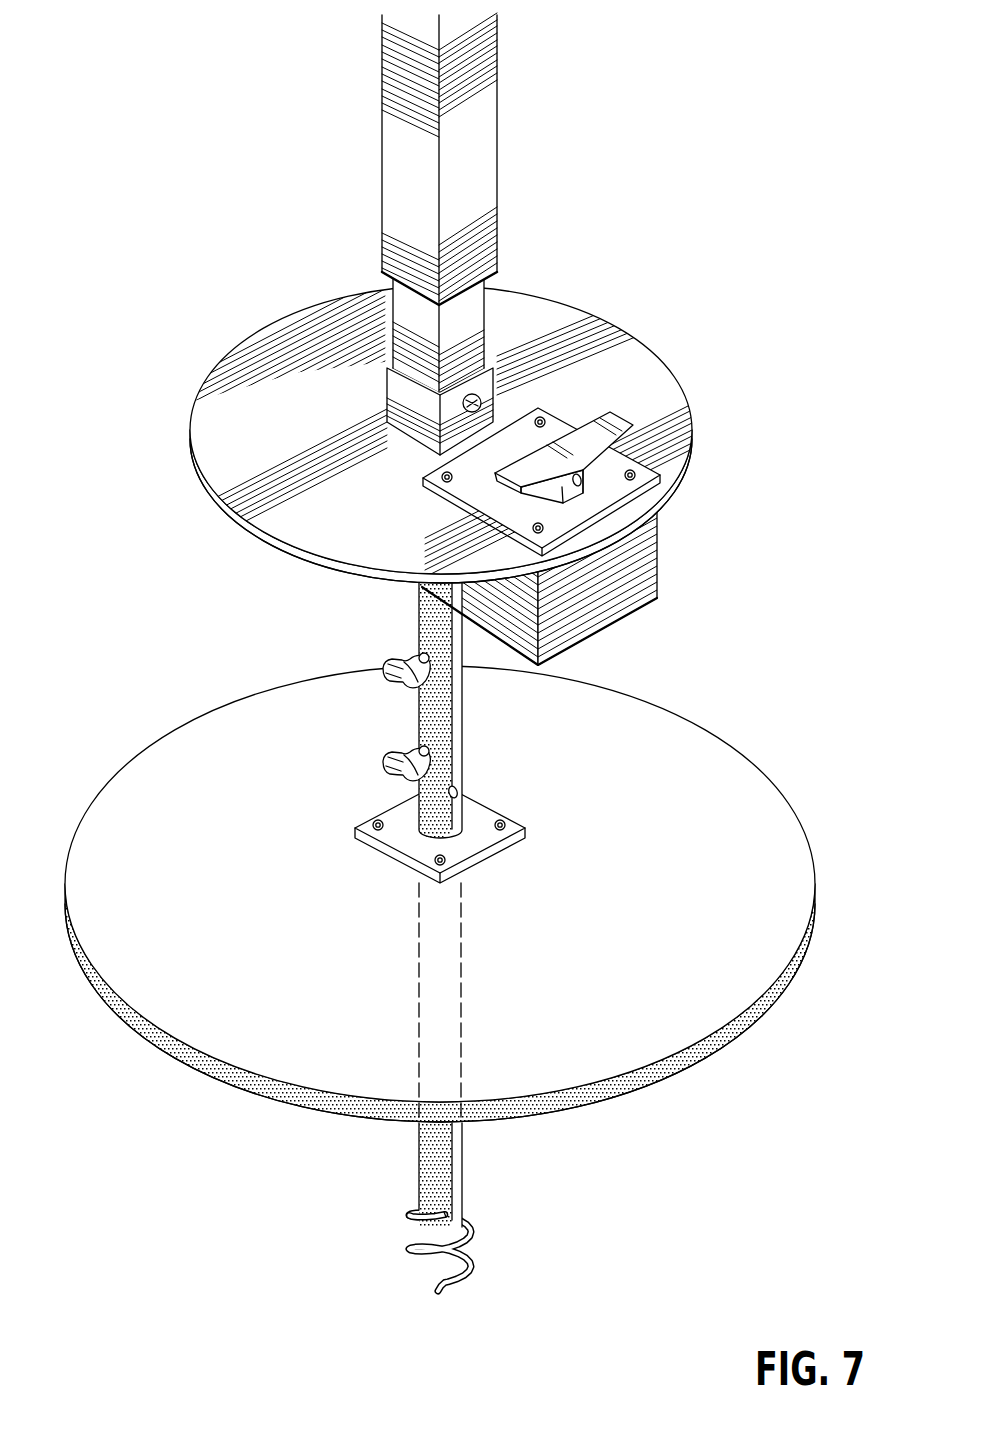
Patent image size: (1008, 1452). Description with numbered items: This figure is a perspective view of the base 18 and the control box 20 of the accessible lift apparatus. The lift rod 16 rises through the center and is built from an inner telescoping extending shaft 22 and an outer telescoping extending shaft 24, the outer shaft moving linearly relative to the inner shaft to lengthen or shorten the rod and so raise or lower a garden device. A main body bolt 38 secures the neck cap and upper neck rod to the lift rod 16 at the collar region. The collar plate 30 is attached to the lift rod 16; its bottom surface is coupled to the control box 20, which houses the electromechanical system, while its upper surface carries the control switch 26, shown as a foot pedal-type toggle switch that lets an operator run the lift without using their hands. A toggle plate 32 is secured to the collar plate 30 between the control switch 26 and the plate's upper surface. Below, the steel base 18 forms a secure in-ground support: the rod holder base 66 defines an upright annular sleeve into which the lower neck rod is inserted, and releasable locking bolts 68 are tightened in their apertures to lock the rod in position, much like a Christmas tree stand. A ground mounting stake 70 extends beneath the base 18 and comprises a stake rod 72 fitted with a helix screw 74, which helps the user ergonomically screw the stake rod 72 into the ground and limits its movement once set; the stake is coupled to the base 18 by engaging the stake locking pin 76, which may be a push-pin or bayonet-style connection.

The lift rod 16 is at (410, 202).
The outer telescoping extending shaft 24 is at (382, 203).
The inner telescoping extending shaft 22 is at (393, 327).
The collar plate 30 is at (263, 326).
The main body bolt 38 is at (483, 401).
The toggle plate 32 is at (552, 423).
The control switch 26 is at (612, 423).
The control box 20 is at (657, 557).
The locking bolts 68 is at (387, 662).
The base 18 is at (170, 733).
The rod holder base 66 is at (463, 713).
The stake locking pin 76 is at (457, 790).
The ground mounting stake 70 is at (445, 1207).
The stake rod 72 is at (465, 1157).
The helix screw 74 is at (440, 1252).